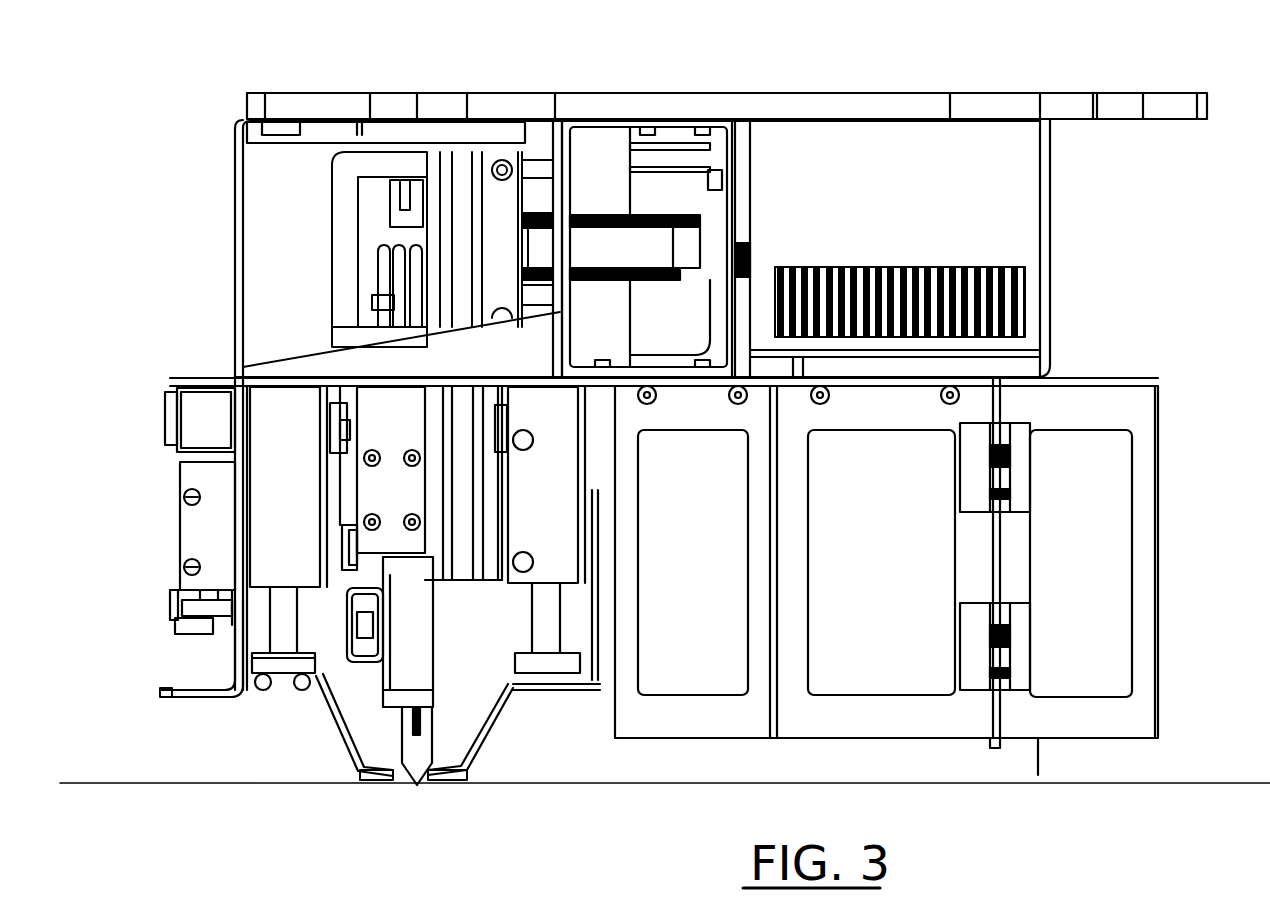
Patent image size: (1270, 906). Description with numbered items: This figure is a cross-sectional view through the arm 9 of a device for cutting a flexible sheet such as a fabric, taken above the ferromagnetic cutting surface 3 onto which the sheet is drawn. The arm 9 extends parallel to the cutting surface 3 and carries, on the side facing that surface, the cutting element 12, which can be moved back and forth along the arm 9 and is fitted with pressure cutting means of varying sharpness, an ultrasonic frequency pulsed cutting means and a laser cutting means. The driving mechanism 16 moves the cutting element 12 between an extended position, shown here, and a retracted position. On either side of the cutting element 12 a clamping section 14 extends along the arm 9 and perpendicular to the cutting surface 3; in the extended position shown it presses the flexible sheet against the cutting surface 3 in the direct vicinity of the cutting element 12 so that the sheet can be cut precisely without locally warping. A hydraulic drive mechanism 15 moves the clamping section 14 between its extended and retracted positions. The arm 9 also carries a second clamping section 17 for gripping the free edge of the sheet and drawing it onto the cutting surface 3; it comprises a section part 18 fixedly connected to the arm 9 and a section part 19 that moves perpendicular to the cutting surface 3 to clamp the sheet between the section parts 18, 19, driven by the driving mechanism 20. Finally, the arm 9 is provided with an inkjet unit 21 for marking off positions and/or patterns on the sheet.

The cutting surface 3 is at (255, 783).
The arm 9 is at (880, 102).
The cutting element 12 is at (435, 655).
The clamping section 14 is at (360, 782).
The hydraulic drive mechanism 15 is at (542, 415).
The driving mechanism for the cutting element 16 is at (638, 240).
The clamping section 17 is at (125, 587).
The section part 18 is at (180, 692).
The section part 19 is at (180, 632).
The driving mechanism for the section part 20 is at (200, 530).
The inkjet unit 21 is at (1105, 355).